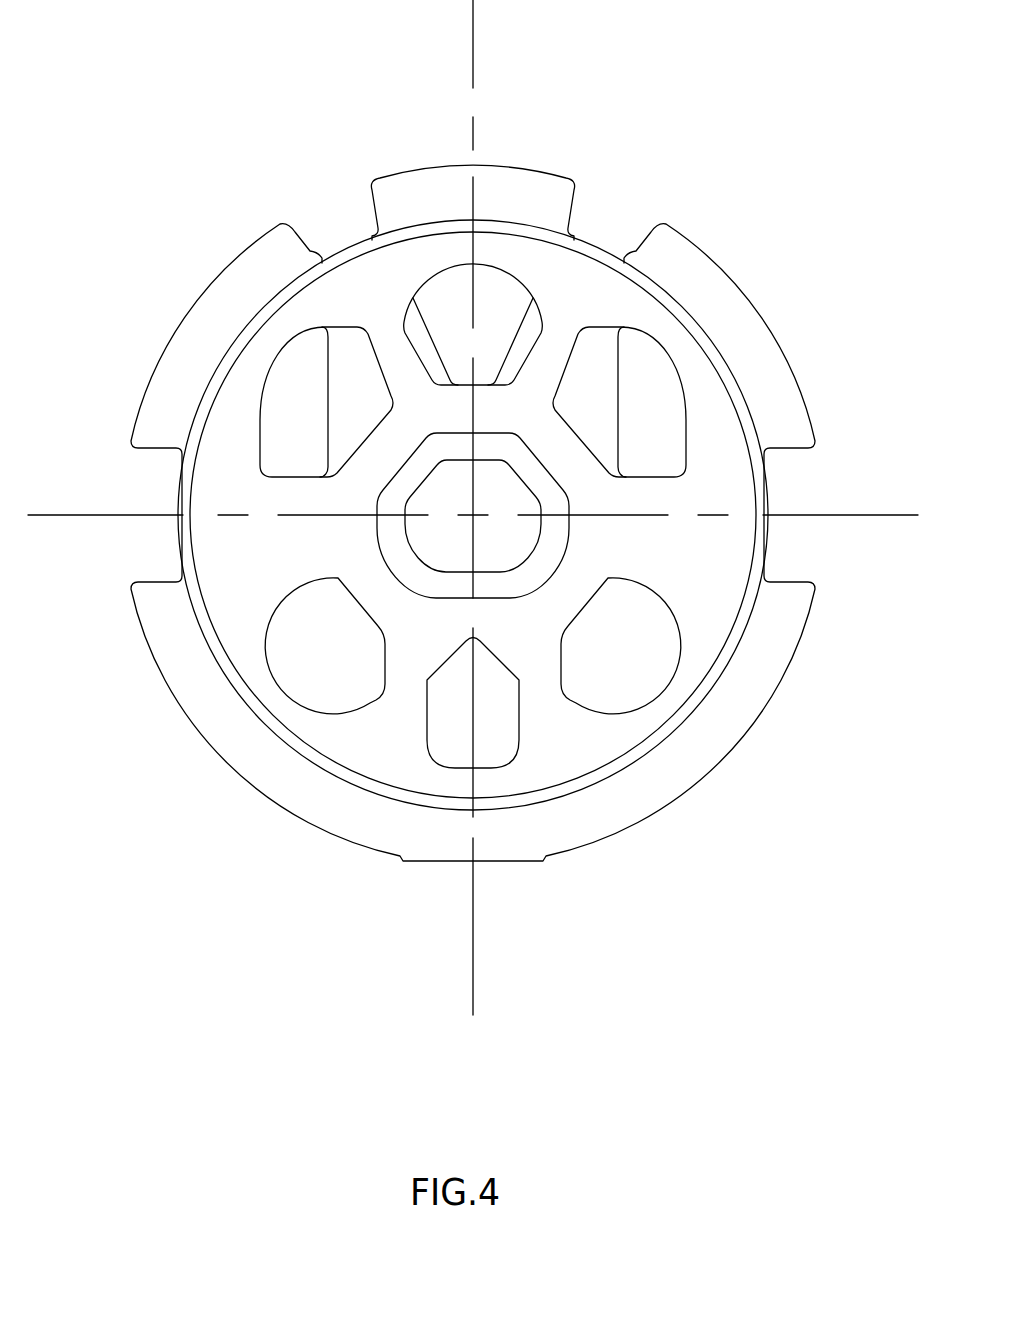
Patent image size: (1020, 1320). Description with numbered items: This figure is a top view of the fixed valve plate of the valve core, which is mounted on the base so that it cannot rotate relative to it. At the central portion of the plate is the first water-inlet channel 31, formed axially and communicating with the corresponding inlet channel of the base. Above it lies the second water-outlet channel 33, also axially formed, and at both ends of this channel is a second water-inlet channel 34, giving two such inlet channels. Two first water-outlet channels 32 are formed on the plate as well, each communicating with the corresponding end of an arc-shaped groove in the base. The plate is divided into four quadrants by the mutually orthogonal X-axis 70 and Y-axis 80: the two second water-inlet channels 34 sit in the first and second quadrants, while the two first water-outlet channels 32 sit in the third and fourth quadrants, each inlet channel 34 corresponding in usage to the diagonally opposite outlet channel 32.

The Y-axis 80 is at (472, 62).
The X-axis 70 is at (858, 515).
The second water-outlet channel 33 is at (503, 303).
The second water-inlet channel 34 is at (287, 393).
The first water-inlet channel 31 is at (442, 540).
The first water-outlet channel 32 is at (340, 645).